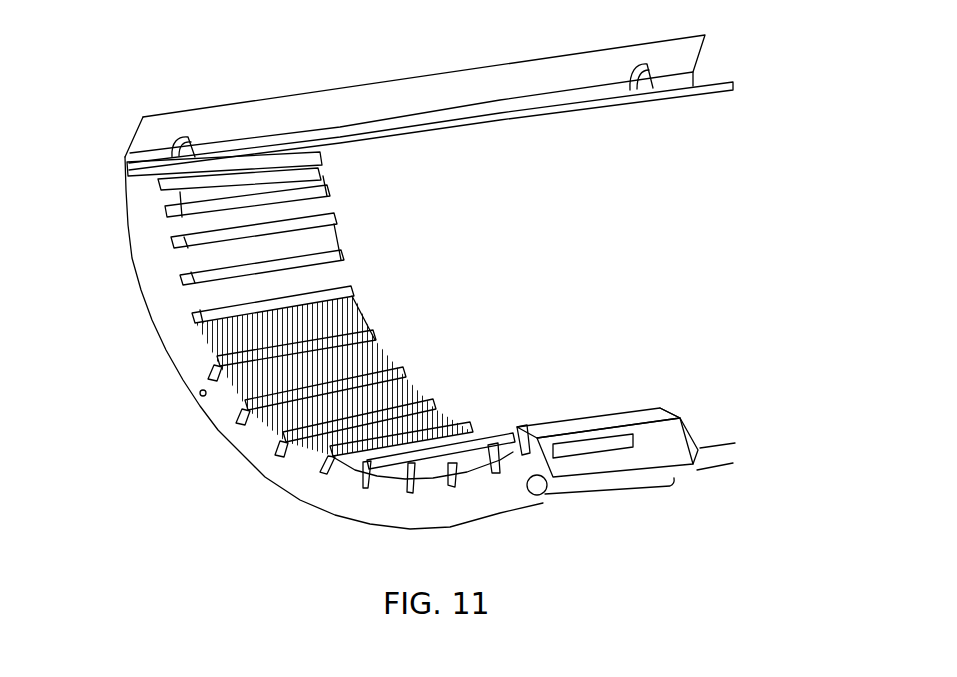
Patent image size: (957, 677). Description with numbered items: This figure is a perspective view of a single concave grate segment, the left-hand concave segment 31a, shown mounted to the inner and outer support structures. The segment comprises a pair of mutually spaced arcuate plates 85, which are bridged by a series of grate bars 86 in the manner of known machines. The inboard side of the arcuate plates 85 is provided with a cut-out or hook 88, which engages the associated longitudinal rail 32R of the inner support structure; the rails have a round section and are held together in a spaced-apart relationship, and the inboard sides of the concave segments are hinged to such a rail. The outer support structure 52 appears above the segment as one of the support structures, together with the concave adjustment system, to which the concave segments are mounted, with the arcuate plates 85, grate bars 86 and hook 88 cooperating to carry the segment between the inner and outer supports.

The support structure 52 is at (455, 92).
The left-hand concave segment 31a is at (253, 435).
The grate bars 86 is at (470, 422).
The cut-out or hook 88 is at (682, 420).
The arcuate plates 85 is at (558, 502).
The longitudinal rail 32R is at (720, 447).